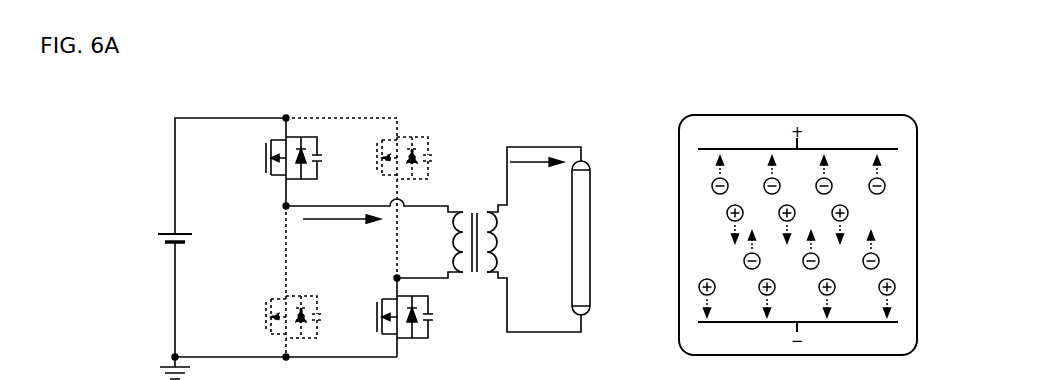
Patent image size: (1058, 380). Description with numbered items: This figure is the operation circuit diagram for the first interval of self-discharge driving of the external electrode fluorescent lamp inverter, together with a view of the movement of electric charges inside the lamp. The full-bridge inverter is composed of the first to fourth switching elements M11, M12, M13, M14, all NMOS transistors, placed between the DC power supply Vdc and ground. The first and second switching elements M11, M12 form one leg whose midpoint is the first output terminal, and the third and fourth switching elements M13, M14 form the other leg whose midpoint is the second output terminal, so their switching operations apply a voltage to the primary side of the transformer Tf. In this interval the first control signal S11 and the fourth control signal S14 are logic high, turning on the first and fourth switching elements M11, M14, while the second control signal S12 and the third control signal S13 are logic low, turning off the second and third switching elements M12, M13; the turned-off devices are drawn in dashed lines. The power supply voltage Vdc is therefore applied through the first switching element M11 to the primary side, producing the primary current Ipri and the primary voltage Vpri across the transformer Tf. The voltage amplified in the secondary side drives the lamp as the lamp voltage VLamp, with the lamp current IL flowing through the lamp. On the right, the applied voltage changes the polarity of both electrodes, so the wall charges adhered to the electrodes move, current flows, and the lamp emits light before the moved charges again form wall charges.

The first control signal S11 is at (268, 169).
The second control signal S12 is at (268, 325).
The third control signal S13 is at (381, 169).
The fourth control signal S14 is at (379, 325).
The first switching element M11 is at (266, 158).
The second switching element M12 is at (266, 317).
The third switching element M13 is at (377, 158).
The fourth switching element M14 is at (377, 317).
The transformer Tf is at (475, 256).
The power supply voltage Vdc is at (157, 238).
The primary current Ipri is at (342, 233).
The primary voltage (Vpri=Vdo) Vpri is at (426, 241).
The lamp current IL is at (537, 174).
The lamp voltage / lamp VLamp is at (611, 238).